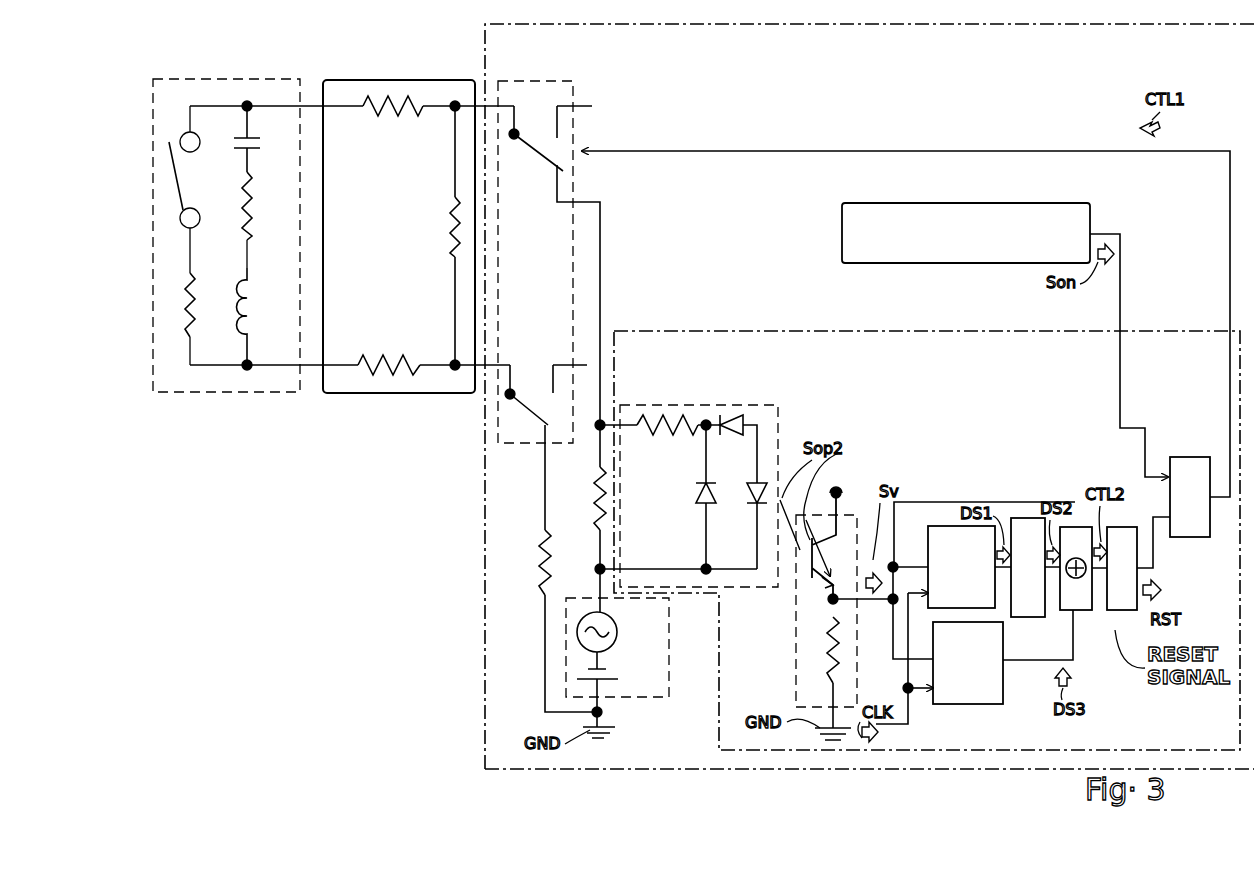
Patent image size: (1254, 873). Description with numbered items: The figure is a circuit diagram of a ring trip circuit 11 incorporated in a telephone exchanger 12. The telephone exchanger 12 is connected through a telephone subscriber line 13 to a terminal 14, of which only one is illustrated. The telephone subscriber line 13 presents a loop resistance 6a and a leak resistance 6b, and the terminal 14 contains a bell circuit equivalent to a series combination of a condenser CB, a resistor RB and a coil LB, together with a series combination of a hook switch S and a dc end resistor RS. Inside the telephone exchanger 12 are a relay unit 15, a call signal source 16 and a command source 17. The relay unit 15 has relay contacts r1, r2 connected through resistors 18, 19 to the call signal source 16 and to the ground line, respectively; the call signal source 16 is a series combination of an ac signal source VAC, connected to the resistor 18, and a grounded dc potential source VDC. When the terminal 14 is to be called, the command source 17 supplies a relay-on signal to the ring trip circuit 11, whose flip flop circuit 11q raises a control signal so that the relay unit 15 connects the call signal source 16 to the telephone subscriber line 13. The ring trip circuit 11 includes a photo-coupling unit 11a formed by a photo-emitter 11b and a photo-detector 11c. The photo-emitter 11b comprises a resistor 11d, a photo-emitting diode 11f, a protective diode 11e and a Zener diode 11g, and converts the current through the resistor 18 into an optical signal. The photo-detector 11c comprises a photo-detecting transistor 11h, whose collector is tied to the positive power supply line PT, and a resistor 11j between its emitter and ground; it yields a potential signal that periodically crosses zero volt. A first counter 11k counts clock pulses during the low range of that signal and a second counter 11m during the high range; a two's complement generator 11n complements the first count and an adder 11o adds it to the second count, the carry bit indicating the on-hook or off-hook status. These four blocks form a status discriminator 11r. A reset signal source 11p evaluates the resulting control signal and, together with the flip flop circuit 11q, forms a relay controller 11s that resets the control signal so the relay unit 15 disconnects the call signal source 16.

The ring trip circuit 11 is at (625, 331).
The photo-coupling unit 11a is at (870, 395).
The photo-emitter 11b is at (760, 404).
The photo-detector 11c is at (814, 588).
The resistor 11d is at (662, 412).
The diode 11e is at (700, 520).
The photo-emitting diode 11f is at (760, 495).
The Zener diode 11g is at (733, 410).
The photo-detecting transistor 11h is at (810, 613).
The resistor 11j is at (828, 662).
The first counter 11k is at (928, 545).
The second counter 11m is at (1005, 695).
The two's complement generator 11n is at (1030, 617).
The adder 11o is at (1083, 612).
The reset signal source 11p is at (1113, 610).
The flip flop circuit 11q is at (1190, 537).
The status discriminator 11r is at (1077, 465).
The relay controller 11s is at (1182, 420).
The telephone exchanger 12 is at (815, 28).
The telephone subscriber line 13 is at (356, 80).
The terminal 14 is at (188, 79).
The relay unit 15 is at (522, 81).
The call signal source 16 is at (618, 665).
The command source 17 is at (842, 218).
The resistor 18 is at (592, 470).
The resistor 19 is at (543, 530).
The loop resistance 6a is at (396, 116).
The leak resistance 6b is at (440, 236).
The hook switch S is at (178, 186).
The condenser CB is at (258, 152).
The resistor RB is at (262, 184).
The coil LB is at (262, 278).
The dc end resistor RS is at (198, 276).
The relay contact r1 is at (534, 128).
The relay contact r2 is at (530, 392).
The positive power supply line PT is at (827, 543).
The ac signal source VAC is at (610, 622).
The dc potential source VDC is at (605, 668).